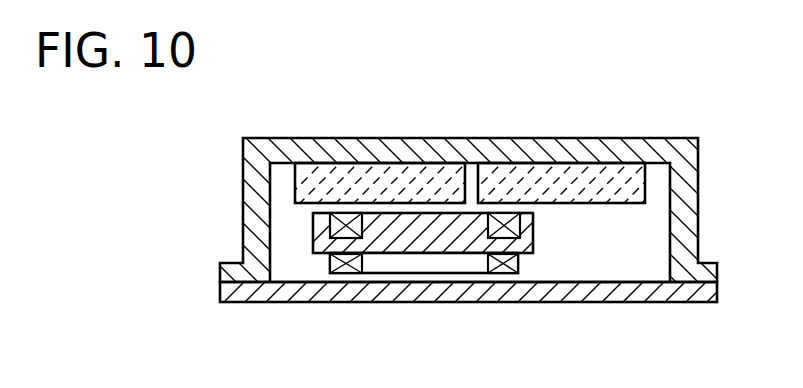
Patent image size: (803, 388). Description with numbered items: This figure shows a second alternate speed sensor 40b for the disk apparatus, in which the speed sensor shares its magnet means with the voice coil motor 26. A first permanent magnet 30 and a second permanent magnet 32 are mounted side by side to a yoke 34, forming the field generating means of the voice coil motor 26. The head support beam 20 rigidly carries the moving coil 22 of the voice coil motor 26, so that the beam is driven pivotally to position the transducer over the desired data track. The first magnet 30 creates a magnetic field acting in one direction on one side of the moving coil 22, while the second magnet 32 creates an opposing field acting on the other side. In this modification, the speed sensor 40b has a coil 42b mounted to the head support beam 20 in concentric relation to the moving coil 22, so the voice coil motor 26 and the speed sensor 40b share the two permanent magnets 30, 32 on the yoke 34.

The support beam 20 is at (423, 245).
The moving coil 22 is at (315, 207).
The voice coil motor 26 is at (650, 218).
The first permanent magnet 30 is at (356, 165).
The second permanent magnet 32 is at (518, 165).
The yoke 34 is at (654, 140).
The second modified speed sensor 40b is at (548, 265).
The coil 42b is at (483, 290).